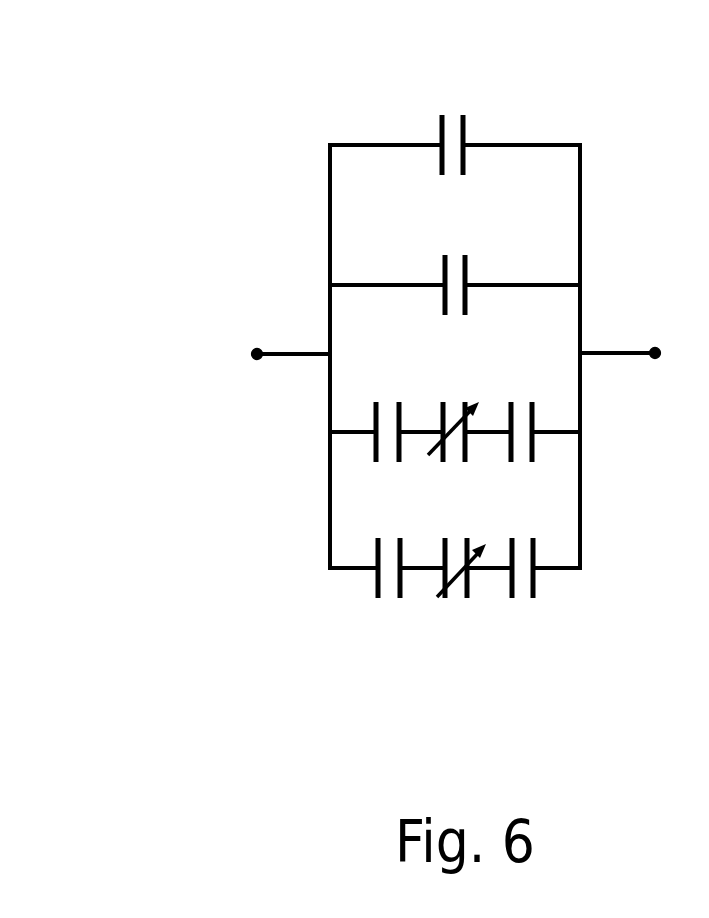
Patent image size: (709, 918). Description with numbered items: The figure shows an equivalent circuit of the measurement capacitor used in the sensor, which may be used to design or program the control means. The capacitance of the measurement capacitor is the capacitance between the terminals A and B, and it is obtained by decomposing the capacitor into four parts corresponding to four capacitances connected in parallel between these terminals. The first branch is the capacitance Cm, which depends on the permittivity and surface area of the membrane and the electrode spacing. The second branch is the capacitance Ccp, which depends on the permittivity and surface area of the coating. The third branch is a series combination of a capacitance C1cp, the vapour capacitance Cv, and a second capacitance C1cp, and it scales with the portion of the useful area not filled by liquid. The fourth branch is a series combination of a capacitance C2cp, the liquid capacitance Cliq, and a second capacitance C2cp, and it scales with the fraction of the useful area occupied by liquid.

The capacitance Cm is at (455, 119).
The capacitance Ccp is at (455, 258).
The capacitance C1cp is at (462, 407).
The capacitance Cv is at (453, 404).
The capacitance C2cp is at (463, 603).
The capacitance Cliq is at (459, 603).
The terminal A is at (269, 355).
The terminal B is at (643, 355).